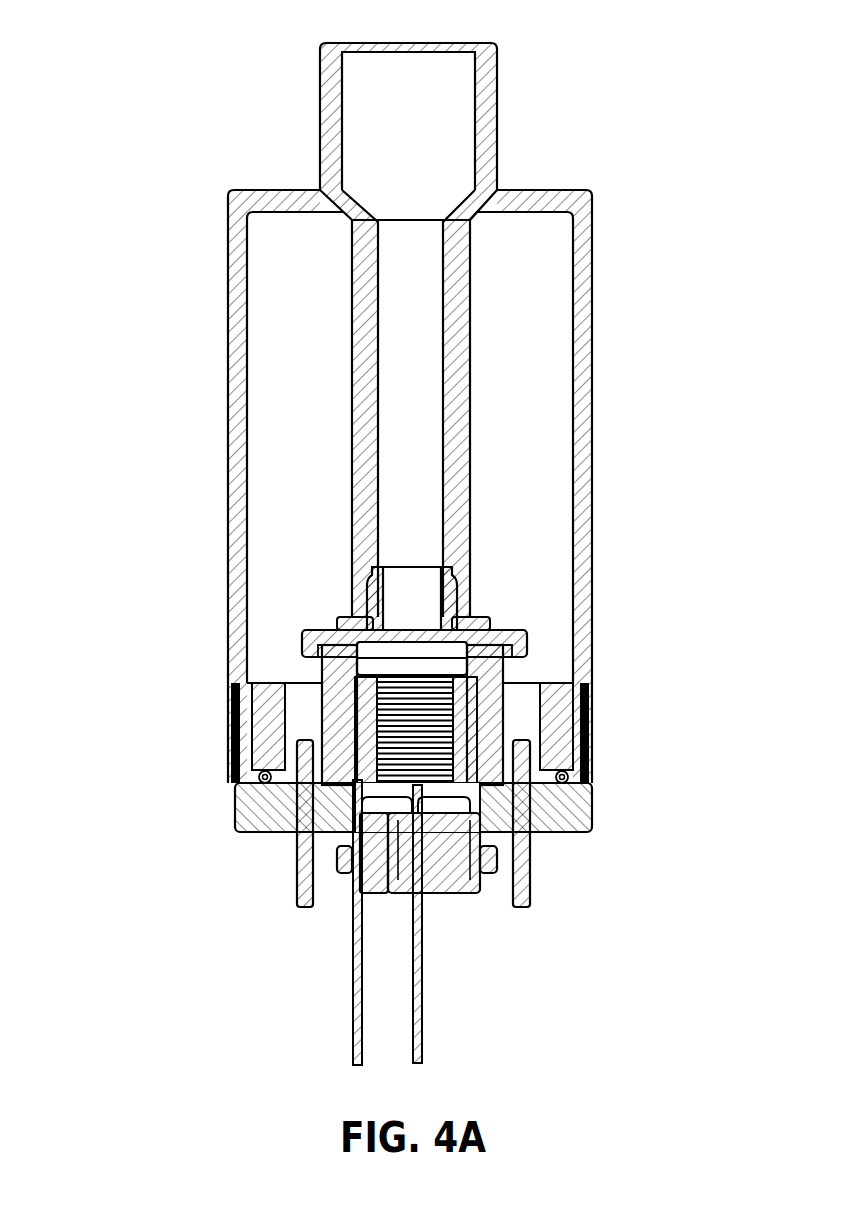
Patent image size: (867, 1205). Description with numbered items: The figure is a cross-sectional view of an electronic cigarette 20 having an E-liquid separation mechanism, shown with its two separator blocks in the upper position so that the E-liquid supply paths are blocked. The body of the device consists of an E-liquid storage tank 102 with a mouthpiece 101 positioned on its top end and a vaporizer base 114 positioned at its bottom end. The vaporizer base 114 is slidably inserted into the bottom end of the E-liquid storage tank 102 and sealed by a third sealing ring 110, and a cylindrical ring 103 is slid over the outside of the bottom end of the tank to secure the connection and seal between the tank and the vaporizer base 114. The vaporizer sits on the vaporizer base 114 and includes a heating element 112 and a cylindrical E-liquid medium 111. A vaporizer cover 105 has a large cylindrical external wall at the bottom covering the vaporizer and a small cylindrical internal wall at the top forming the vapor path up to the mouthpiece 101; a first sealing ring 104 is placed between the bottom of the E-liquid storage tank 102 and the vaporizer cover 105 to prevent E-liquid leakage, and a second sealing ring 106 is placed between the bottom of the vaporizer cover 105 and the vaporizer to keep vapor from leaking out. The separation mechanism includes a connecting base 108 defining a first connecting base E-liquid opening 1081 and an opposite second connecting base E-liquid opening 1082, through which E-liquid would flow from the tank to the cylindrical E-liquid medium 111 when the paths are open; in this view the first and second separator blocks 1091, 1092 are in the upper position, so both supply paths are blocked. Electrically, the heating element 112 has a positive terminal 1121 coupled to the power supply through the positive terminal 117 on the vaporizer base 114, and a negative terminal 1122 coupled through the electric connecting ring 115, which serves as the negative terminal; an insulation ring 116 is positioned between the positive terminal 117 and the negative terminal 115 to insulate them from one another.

The electronic cigarette 20 is at (68, 108).
The mouthpiece 101 is at (497, 118).
The E-liquid storage tank 102 is at (594, 385).
The cylindrical ring 103 is at (598, 748).
The first sealing ring 104 is at (495, 620).
The vaporizer cover 105 is at (303, 633).
The second sealing ring 106 is at (527, 645).
The connecting base 108 is at (512, 675).
The first connecting base E-liquid opening 1081 is at (365, 765).
The second connecting base E-liquid opening 1082 is at (523, 712).
The left housing block 1091 is at (305, 720).
The right housing block 1092 is at (518, 688).
The third sealing ring 110 is at (597, 783).
The cylindrical E-liquid medium 111 is at (340, 722).
The heating element 112 is at (345, 690).
The positive terminal 1121 is at (422, 958).
The negative terminal 1122 is at (353, 938).
The vaporizer base 114 is at (597, 815).
The electric connecting ring 115 is at (497, 860).
The insulation ring 116 is at (353, 892).
The positive terminal 117 is at (433, 883).